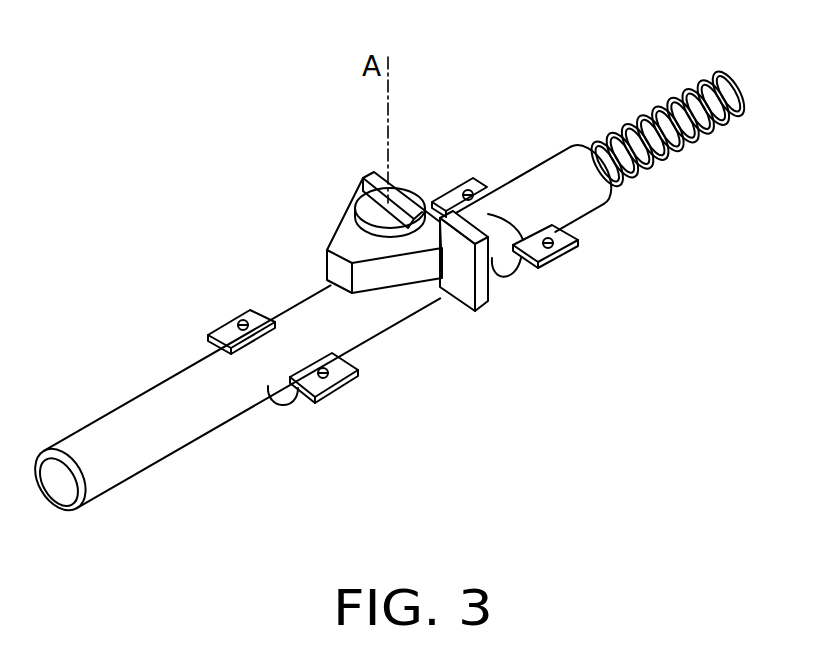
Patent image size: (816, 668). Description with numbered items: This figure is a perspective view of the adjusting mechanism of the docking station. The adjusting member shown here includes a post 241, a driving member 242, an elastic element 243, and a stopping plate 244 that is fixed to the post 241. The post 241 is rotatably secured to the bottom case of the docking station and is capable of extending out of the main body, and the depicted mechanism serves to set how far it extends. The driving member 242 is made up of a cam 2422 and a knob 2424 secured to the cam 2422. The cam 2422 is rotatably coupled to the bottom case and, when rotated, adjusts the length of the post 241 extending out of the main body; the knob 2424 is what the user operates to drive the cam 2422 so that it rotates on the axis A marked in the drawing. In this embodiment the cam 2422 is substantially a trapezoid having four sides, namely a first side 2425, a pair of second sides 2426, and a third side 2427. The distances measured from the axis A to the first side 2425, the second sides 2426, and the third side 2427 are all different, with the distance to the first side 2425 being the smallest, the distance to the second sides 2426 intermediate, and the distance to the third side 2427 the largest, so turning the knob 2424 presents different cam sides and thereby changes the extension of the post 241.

The post 241 is at (561, 178).
The driving member 242 is at (232, 138).
The elastic element 243 is at (690, 84).
The stopping plate 244 is at (376, 178).
The cam 2422 is at (353, 202).
The knob 2424 is at (342, 277).
The first side 2425 is at (520, 248).
The second side 2426 is at (439, 315).
The third side 2427 is at (342, 267).